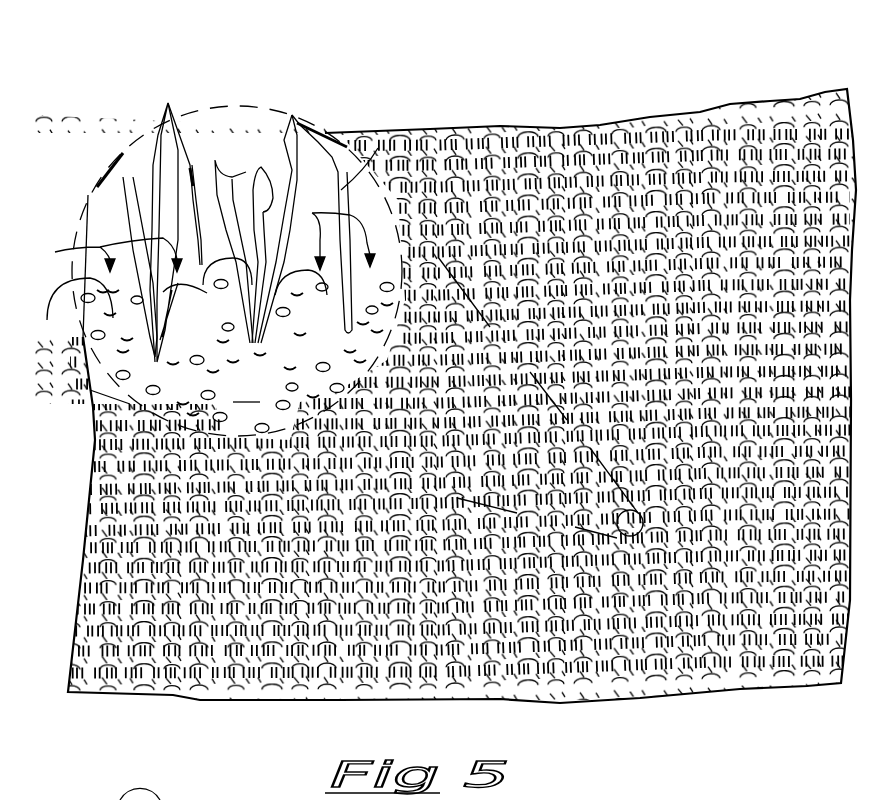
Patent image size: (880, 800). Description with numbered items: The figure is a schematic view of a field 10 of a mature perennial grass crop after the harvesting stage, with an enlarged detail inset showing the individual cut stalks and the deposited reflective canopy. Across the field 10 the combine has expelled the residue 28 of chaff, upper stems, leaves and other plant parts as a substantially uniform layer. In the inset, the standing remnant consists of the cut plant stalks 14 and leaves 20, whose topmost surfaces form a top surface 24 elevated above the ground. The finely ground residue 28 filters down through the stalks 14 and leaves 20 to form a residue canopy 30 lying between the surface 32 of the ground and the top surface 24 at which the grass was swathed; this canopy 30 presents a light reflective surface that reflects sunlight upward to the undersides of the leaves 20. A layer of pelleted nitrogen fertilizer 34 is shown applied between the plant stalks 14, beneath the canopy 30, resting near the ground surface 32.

The field 10 is at (556, 93).
The plant stalks 14 is at (380, 148).
The leaves 20 is at (120, 212).
The top surface 24 is at (48, 182).
The residue 28 is at (118, 338).
The residue canopy 30 is at (198, 227).
The ground surface 32 is at (248, 387).
The fertilizer 34 is at (163, 380).